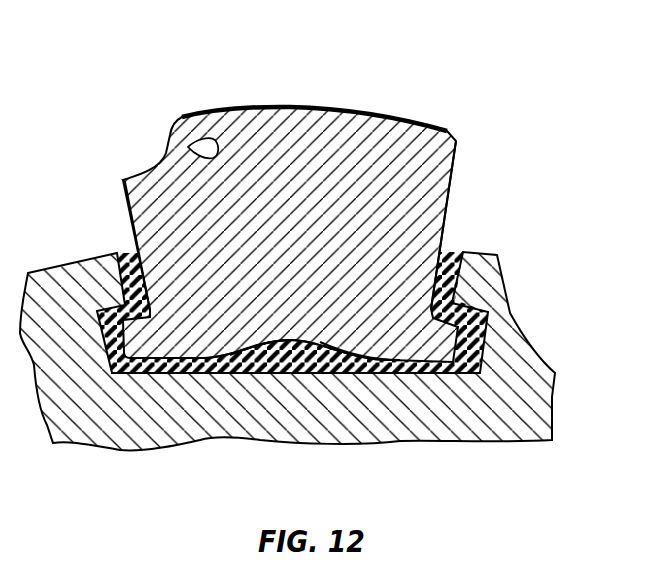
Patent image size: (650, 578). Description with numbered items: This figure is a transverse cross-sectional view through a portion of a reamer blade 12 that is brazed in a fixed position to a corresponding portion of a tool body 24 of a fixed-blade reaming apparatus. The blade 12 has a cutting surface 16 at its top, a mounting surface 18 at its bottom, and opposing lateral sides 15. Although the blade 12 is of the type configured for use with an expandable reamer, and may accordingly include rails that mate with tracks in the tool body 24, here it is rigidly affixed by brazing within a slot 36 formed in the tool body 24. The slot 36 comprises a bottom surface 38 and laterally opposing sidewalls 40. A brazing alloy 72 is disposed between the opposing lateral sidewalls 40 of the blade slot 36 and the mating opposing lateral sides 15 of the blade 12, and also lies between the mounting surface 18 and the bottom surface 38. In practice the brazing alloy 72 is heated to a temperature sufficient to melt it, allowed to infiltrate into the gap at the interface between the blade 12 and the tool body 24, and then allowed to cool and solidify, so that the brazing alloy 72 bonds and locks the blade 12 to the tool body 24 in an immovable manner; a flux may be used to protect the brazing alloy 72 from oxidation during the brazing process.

The blade 12 is at (355, 98).
The opposing lateral sides 15 is at (127, 218).
The cutting surface 16 is at (297, 107).
The mounting surface 18 is at (288, 373).
The tool body 24 is at (507, 420).
The slot 36 is at (258, 362).
The bottom surface 38 is at (343, 362).
The laterally opposing sidewalls 40 is at (153, 292).
The brazing alloy 72 is at (226, 362).